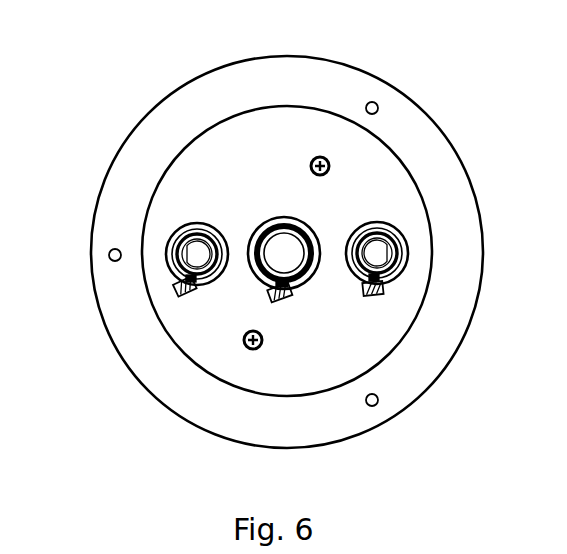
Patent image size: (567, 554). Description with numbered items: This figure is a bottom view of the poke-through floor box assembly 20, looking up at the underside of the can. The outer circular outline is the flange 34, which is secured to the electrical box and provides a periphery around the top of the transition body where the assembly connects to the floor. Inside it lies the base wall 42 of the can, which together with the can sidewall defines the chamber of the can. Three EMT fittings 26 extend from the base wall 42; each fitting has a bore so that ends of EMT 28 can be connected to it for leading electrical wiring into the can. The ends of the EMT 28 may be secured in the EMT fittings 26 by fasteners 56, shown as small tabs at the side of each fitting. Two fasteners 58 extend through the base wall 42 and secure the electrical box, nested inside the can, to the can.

The poke-through floor box assembly 20 is at (72, 120).
The flange 34 is at (420, 378).
The base wall 42 is at (254, 176).
The fasteners 58 is at (245, 350).
The EMT 28 is at (293, 232).
The EMT fittings 26 is at (298, 282).
The fasteners 56 is at (385, 292).